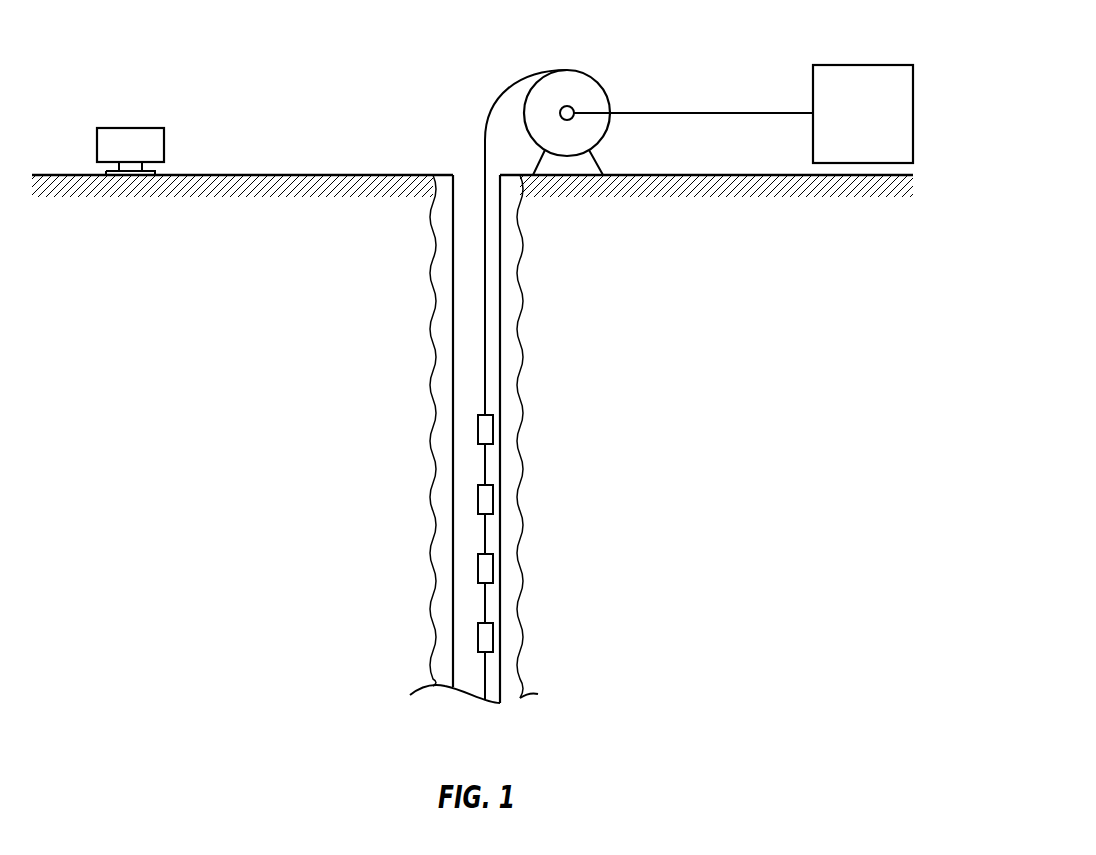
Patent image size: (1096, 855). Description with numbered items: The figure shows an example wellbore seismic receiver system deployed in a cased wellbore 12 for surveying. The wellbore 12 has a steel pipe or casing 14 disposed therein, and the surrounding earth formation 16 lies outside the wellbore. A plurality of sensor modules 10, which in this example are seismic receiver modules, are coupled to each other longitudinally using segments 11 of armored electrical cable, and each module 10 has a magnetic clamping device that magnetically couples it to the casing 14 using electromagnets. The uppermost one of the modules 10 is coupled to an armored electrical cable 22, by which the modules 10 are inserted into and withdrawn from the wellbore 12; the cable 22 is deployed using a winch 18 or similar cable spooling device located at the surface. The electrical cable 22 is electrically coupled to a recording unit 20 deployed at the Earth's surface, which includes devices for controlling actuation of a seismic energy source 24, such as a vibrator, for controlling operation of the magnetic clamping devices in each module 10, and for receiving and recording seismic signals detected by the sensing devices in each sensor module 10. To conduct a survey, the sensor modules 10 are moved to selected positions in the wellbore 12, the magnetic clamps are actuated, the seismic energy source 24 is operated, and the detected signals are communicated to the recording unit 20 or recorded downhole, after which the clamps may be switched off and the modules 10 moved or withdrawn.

The sensor module 10 is at (486, 431).
The segment of armored electrical cable 11 is at (482, 463).
The wellbore 12 is at (511, 357).
The casing 14 is at (503, 312).
The formation 16 is at (762, 413).
The winch 18 is at (580, 88).
The recording unit 20 is at (863, 78).
The armored electrical cable 22 is at (488, 282).
The seismic energy source 24 is at (128, 142).